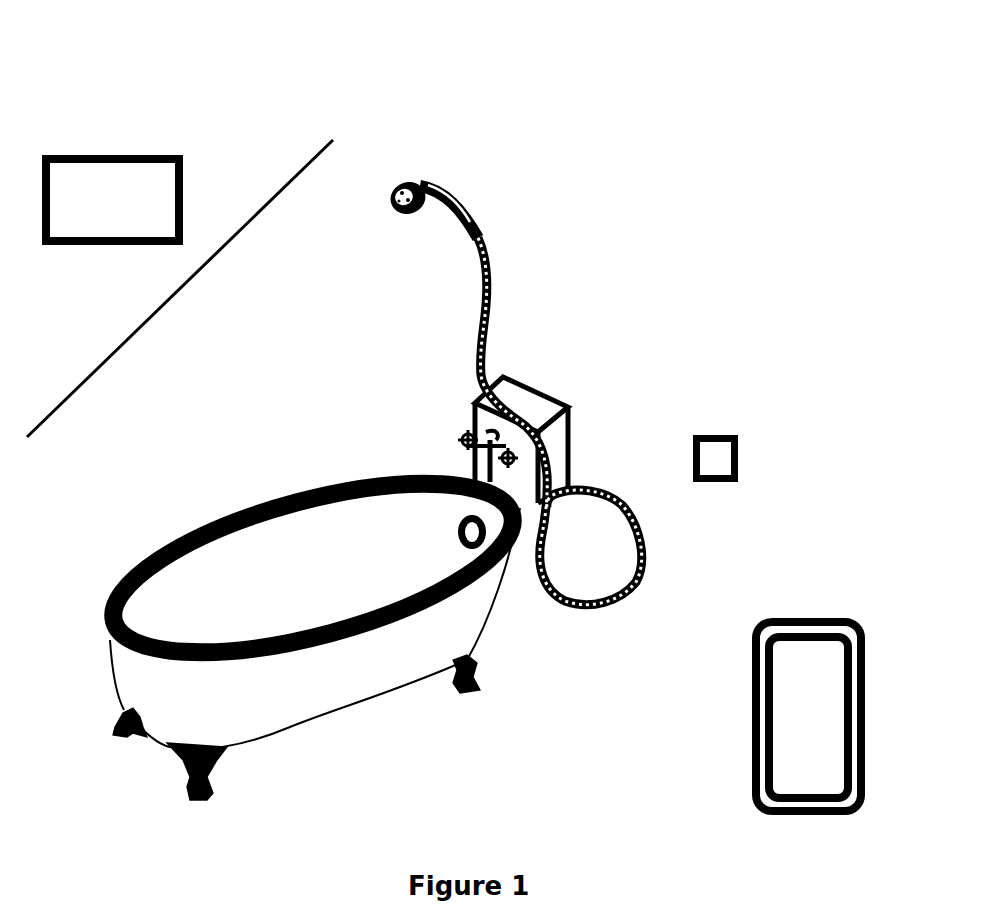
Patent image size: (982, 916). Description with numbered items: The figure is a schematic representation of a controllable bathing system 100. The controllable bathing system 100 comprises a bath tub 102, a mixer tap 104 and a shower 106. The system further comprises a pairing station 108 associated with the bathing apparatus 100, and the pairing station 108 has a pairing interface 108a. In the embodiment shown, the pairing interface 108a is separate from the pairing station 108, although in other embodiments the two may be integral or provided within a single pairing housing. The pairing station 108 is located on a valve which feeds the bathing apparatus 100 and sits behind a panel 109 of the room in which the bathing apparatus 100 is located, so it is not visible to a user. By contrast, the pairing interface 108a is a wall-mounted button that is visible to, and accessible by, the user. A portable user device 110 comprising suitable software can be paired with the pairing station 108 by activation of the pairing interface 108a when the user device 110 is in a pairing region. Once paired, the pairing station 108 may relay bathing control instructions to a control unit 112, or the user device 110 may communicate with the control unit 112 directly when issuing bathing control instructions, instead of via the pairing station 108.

The controllable bathing system 100 is at (165, 96).
The bath tub 102 is at (313, 624).
The mixer tap 104 is at (456, 438).
The shower 106 is at (430, 180).
The pairing station 108 is at (112, 200).
The pairing interface 108a is at (711, 457).
The panel 109 is at (310, 163).
The portable user device 110 is at (808, 716).
The control unit 112 is at (540, 388).